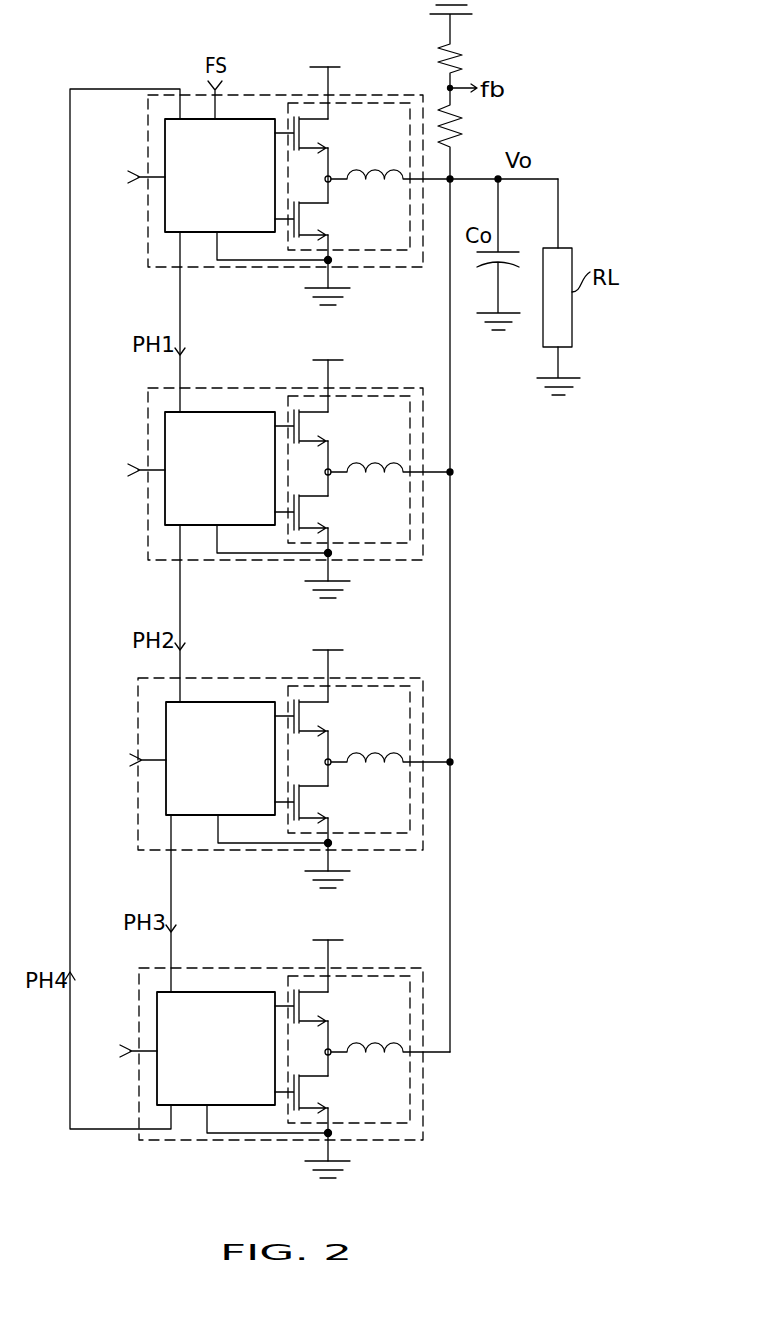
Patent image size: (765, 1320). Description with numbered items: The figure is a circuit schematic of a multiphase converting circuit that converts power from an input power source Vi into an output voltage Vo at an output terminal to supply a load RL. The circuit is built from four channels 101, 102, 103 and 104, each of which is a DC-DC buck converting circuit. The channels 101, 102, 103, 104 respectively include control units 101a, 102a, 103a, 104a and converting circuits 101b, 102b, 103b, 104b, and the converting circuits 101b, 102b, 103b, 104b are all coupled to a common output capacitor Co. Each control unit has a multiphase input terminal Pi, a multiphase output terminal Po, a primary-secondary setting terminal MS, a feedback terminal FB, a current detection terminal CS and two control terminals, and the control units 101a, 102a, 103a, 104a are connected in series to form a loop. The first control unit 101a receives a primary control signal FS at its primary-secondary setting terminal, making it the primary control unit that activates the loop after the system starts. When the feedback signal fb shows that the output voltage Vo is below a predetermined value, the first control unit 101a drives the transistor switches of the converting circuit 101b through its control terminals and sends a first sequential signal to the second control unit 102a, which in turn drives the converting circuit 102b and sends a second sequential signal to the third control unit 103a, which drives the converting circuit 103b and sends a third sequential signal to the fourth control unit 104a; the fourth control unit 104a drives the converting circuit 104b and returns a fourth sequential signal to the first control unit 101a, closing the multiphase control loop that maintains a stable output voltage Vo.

The first channel 101 is at (372, 95).
The first control unit 101a is at (167, 201).
The first converting circuit 101b is at (373, 250).
The second channel 102 is at (372, 388).
The second control unit 102a is at (167, 494).
The second converting circuit 102b is at (373, 543).
The third channel 103 is at (372, 678).
The third control unit 103a is at (168, 786).
The third converting circuit 103b is at (373, 833).
The fourth channel 104 is at (372, 968).
The fourth control unit 104a is at (159, 1076).
The fourth converting circuit 104b is at (373, 1123).